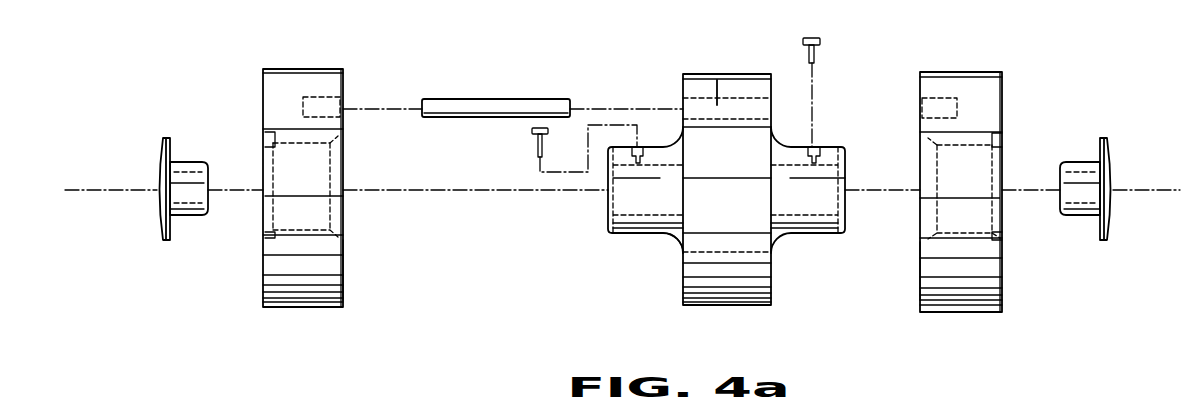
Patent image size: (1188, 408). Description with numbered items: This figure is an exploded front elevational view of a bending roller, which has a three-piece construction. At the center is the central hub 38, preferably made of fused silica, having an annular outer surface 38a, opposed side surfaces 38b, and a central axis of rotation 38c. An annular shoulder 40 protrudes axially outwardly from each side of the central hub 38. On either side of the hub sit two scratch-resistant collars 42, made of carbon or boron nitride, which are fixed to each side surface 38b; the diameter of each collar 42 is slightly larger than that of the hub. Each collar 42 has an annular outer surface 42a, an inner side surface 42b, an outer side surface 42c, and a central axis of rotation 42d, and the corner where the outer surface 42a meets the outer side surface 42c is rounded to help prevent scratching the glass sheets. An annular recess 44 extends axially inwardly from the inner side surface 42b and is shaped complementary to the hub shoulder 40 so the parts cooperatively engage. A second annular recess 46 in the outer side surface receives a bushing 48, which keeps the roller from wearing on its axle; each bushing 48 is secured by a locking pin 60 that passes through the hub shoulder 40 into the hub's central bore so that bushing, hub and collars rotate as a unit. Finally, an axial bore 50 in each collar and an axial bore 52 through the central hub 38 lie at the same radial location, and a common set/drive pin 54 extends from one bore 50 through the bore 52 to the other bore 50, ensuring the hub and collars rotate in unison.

The central hub 38 is at (707, 262).
The annular outer surface 38a is at (753, 74).
The side surfaces 38b is at (710, 202).
The central axis of rotation 38c is at (667, 237).
The annular shoulder 40 is at (830, 147).
The scratch-resistant collar 42 is at (280, 77).
The annular outer surface 42a is at (290, 310).
The inner side surface 42b is at (345, 262).
The outer side surface 42c is at (262, 275).
The central axis of rotation 42d is at (968, 208).
The annular recess 44 is at (338, 207).
The annular recess 46 is at (268, 145).
The bushing 48 is at (160, 157).
The axial bore 50 is at (323, 97).
The axial bore 52 is at (713, 73).
The set/drive pin 54 is at (476, 110).
The locking pin 60 is at (532, 142).